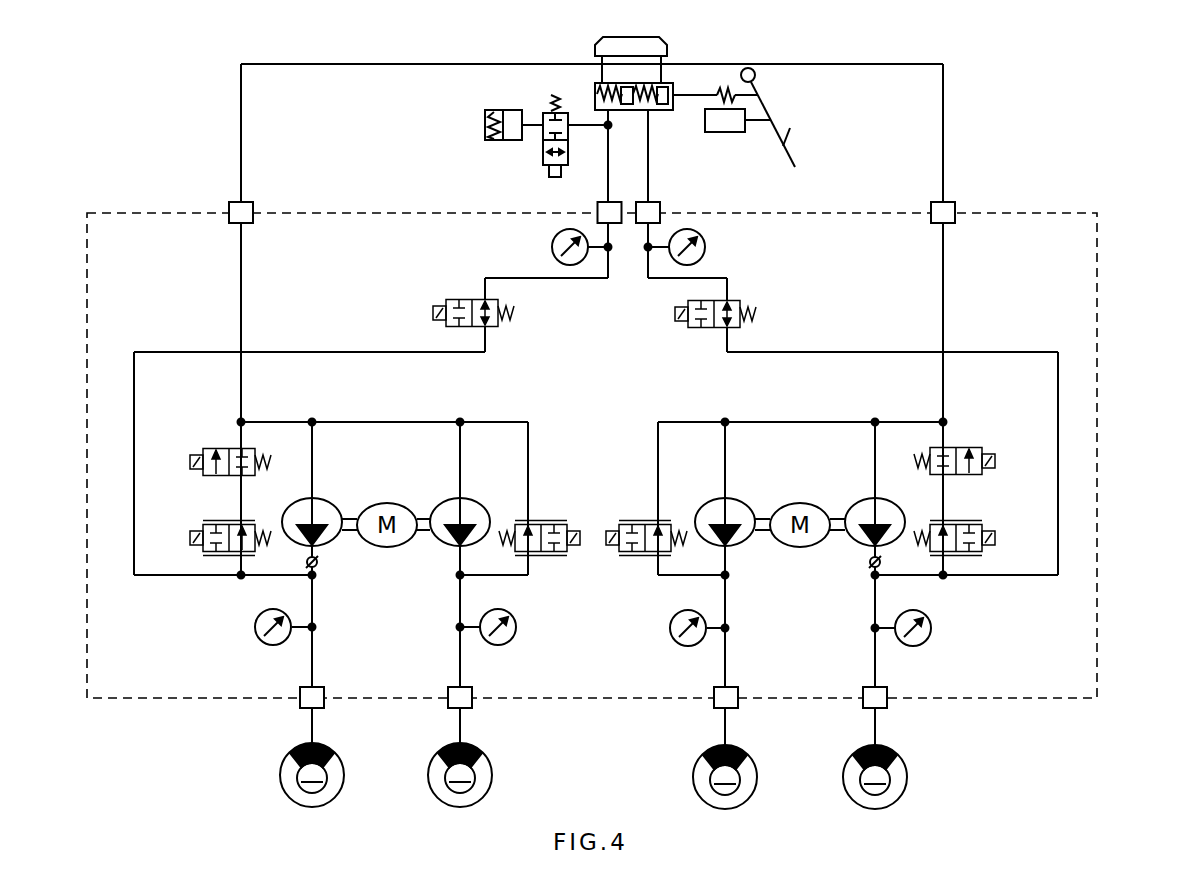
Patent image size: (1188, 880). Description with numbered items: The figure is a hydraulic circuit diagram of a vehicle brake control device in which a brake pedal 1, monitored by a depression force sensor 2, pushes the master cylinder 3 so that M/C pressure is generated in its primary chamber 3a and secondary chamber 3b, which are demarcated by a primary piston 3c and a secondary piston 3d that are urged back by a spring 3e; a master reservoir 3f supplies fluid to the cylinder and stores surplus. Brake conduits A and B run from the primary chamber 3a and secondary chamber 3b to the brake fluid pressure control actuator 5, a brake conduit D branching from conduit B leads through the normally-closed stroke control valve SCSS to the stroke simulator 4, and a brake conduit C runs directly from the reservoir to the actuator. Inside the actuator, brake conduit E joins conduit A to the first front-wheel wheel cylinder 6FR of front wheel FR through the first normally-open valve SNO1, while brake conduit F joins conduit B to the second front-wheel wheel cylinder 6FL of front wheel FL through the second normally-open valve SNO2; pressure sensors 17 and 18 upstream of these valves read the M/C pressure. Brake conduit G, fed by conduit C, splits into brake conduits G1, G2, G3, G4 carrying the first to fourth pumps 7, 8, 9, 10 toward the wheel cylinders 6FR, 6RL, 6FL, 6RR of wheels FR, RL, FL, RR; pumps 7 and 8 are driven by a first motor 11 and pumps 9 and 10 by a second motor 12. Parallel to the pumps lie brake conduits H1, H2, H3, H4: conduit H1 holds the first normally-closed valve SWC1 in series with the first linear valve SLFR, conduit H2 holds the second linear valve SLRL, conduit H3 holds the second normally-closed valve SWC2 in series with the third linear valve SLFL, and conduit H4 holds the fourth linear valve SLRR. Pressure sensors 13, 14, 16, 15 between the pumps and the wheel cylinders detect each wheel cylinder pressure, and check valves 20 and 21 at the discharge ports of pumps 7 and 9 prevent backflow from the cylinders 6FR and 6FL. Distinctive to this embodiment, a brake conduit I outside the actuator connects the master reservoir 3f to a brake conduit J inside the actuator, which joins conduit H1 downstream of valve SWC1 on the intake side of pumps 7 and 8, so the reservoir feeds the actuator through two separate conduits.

The brake pedal 1 is at (788, 132).
The depression force sensor 2 is at (738, 133).
The master cylinder 3 is at (652, 103).
The primary chamber 3a is at (656, 102).
The secondary chamber 3b is at (612, 104).
The primary piston 3c is at (668, 90).
The secondary piston 3d is at (622, 87).
The spring 3e is at (651, 104).
The master reservoir 3f is at (611, 42).
The stroke simulator 4 is at (485, 125).
The brake fluid pressure control actuator 5 is at (1098, 225).
The first pump 7 is at (863, 546).
The second pump 8 is at (739, 546).
The third pump 9 is at (330, 546).
The fourth pump 10 is at (453, 546).
The first motor 11 is at (800, 547).
The second motor 12 is at (388, 547).
The first pressure sensor 13 is at (918, 646).
The second pressure sensor 14 is at (683, 646).
The fourth pressure sensor 15 is at (505, 646).
The third pressure sensor 16 is at (270, 646).
The pressure sensor 17 is at (705, 248).
The pressure sensor 18 is at (552, 248).
The check valve 20 is at (881, 564).
The check valve 21 is at (306, 563).
The second front-wheel wheel cylinder 6FL is at (356, 740).
The second rear-wheel wheel cylinder 6RR is at (504, 740).
The first rear-wheel wheel cylinder 6RL is at (770, 740).
The first front-wheel wheel cylinder 6FR is at (918, 740).
The front wheel FL is at (340, 757).
The rear wheel RR is at (489, 757).
The rear wheel RL is at (754, 758).
The front wheel FR is at (904, 758).
The stroke control valve SCSS is at (543, 158).
The first normally-open valve SNO1 is at (742, 300).
The second normally-open valve SNO2 is at (450, 300).
The first normally-closed valve SWC1 is at (975, 448).
The second normally-closed valve SWC2 is at (210, 450).
The third linear valve SLFL is at (235, 536).
The first linear valve SLFR is at (960, 522).
The second linear valve SLRL is at (630, 520).
The fourth linear valve SLRR is at (544, 520).
The brake conduit A is at (652, 190).
The brake conduit B is at (606, 190).
The brake conduit C is at (352, 64).
The brake conduit D is at (603, 127).
The brake conduit E is at (991, 352).
The brake conduit F is at (305, 352).
The brake conduit G is at (240, 257).
The brake conduit I is at (905, 64).
The brake conduit J is at (945, 258).
The brake conduit G1 is at (875, 450).
The brake conduit G2 is at (725, 450).
The brake conduit G3 is at (314, 450).
The brake conduit G4 is at (460, 450).
The brake conduit H1 is at (897, 422).
The brake conduit H2 is at (660, 450).
The brake conduit H3 is at (243, 490).
The brake conduit H4 is at (527, 450).